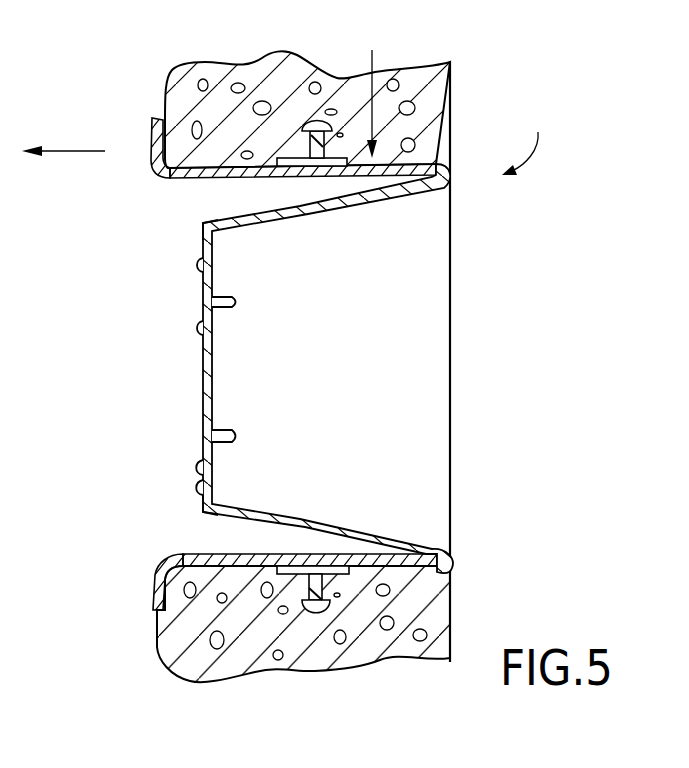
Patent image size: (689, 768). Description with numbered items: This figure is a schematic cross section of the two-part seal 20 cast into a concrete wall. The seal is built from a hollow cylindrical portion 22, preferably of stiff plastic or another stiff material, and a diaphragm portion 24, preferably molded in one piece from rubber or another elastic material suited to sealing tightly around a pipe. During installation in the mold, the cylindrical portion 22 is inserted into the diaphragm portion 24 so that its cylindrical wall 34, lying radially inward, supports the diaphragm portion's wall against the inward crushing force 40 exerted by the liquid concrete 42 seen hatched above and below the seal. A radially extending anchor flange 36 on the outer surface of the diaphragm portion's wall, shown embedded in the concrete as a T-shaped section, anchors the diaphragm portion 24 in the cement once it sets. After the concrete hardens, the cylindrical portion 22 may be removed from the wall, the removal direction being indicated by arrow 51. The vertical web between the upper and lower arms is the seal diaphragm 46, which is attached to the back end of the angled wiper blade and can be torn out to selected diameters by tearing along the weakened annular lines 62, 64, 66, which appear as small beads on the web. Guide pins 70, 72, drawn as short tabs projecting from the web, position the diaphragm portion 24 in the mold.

The two-part seal 20 is at (528, 140).
The hollow cylindrical portion 22 is at (153, 142).
The diaphragm portion 24 is at (427, 160).
The cylindrical wall 34 is at (233, 178).
The anchor flange 36 is at (313, 121).
The inward crushing force 40 is at (368, 80).
The liquid concrete 42 is at (257, 72).
The seal diaphragm 46 is at (203, 350).
The removal 51 is at (70, 150).
The weakened annular line 62 is at (210, 329).
The weakened annular line 64 is at (206, 266).
The weakened annular line 66 is at (213, 230).
The guide pin 70 is at (239, 303).
The guide pin 72 is at (237, 436).